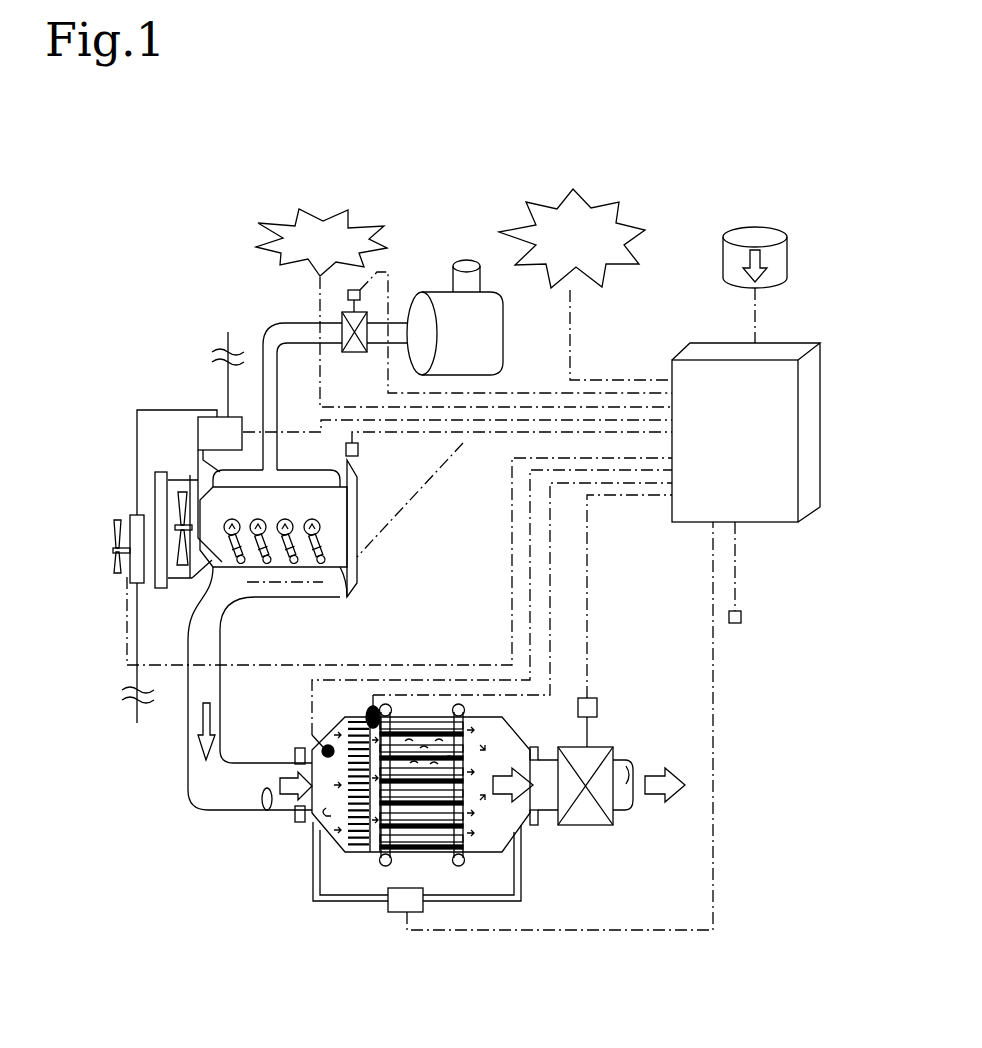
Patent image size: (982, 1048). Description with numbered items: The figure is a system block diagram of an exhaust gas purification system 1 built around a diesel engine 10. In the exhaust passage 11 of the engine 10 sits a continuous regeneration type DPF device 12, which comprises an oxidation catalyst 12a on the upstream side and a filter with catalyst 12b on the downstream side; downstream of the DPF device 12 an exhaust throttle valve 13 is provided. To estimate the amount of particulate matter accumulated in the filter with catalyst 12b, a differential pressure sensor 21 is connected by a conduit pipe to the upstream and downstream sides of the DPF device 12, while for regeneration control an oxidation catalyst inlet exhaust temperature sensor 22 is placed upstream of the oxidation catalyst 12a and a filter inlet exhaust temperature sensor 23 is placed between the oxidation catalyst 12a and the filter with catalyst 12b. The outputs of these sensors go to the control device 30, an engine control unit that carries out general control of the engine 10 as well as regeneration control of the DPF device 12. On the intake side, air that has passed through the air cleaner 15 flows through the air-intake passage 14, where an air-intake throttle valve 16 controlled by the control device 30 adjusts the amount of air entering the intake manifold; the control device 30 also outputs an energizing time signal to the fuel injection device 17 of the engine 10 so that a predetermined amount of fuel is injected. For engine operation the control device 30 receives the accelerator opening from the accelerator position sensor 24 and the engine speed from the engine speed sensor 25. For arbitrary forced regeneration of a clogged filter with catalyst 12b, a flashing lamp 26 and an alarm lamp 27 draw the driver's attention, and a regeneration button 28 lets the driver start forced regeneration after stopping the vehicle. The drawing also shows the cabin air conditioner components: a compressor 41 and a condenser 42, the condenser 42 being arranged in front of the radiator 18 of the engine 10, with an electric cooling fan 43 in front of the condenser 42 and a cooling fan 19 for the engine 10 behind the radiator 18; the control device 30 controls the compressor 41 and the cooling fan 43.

The exhaust gas purification system 1 is at (673, 240).
The diesel engine 10 is at (342, 512).
The exhaust passage 11 is at (213, 811).
The continuous regeneration type DPF device 12 is at (481, 853).
The oxidation catalyst 12a is at (357, 818).
The filter with catalyst 12b is at (429, 816).
The exhaust throttle valve 13 is at (600, 748).
The air-intake passage 14 is at (273, 326).
The air cleaner 15 is at (435, 298).
The air-intake throttle valve 16 is at (357, 352).
The fuel injection device 17 is at (320, 547).
The radiator 18 is at (156, 478).
The cooling fan 19 is at (180, 503).
The differential pressure sensor 21 is at (398, 903).
The oxidation catalyst inlet exhaust temperature sensor 22 is at (323, 745).
The filter inlet exhaust temperature sensor 23 is at (371, 706).
The accelerator position sensor 24 is at (742, 617).
The engine speed sensor 25 is at (359, 450).
The flashing lamp 26 is at (333, 232).
The alarm lamp 27 is at (575, 215).
The regeneration button 28 is at (763, 235).
The control device 30 is at (785, 352).
The compressor 41 is at (213, 427).
The condenser 42 is at (130, 580).
The cooling fan 43 is at (117, 572).